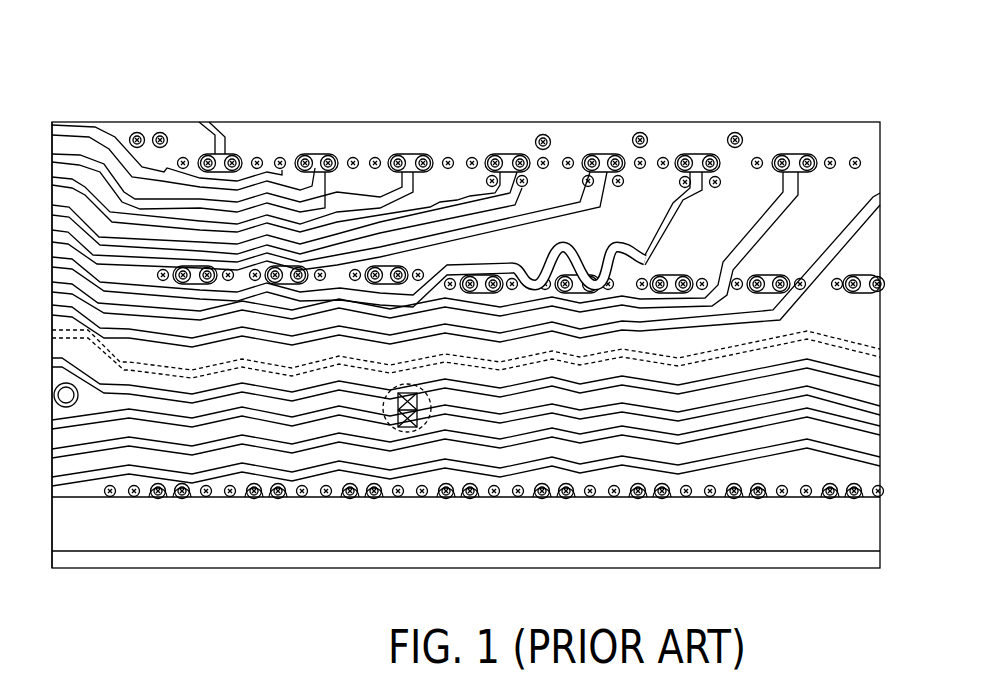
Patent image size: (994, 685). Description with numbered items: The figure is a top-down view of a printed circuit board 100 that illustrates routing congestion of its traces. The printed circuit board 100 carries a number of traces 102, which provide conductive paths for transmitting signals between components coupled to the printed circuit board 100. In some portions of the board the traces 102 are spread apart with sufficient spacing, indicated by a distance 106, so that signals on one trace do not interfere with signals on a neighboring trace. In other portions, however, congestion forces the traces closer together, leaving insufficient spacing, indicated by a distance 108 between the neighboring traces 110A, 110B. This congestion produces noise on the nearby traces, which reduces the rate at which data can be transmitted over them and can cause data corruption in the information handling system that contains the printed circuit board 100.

The printed circuit board 100 is at (139, 104).
The traces 102 is at (53, 170).
The distance 106 is at (419, 232).
The distance 108 is at (402, 432).
The trace 110A is at (880, 380).
The trace 110B is at (880, 403).